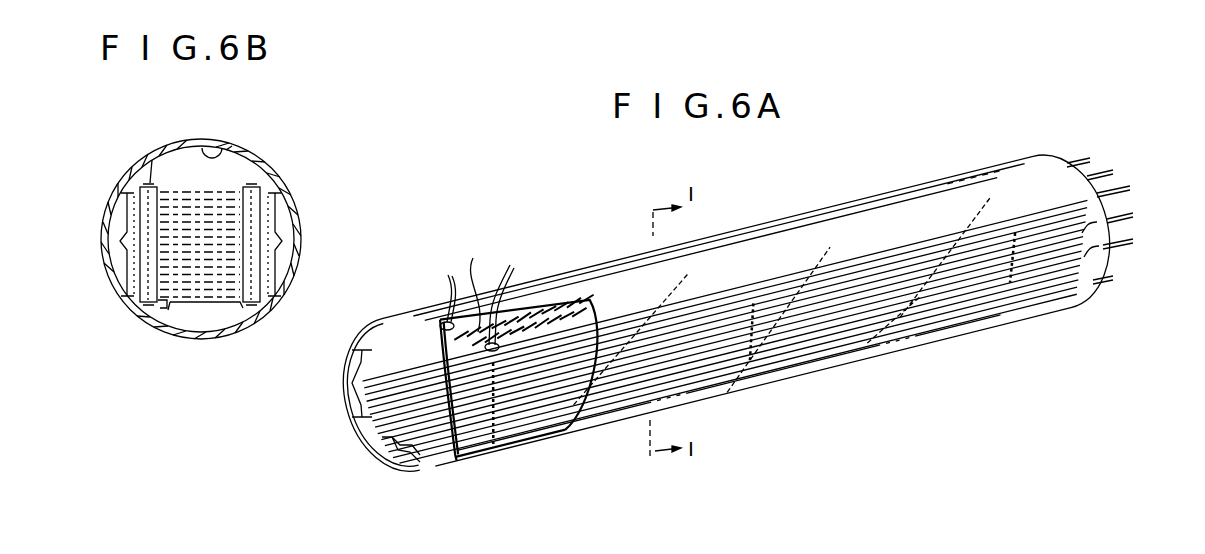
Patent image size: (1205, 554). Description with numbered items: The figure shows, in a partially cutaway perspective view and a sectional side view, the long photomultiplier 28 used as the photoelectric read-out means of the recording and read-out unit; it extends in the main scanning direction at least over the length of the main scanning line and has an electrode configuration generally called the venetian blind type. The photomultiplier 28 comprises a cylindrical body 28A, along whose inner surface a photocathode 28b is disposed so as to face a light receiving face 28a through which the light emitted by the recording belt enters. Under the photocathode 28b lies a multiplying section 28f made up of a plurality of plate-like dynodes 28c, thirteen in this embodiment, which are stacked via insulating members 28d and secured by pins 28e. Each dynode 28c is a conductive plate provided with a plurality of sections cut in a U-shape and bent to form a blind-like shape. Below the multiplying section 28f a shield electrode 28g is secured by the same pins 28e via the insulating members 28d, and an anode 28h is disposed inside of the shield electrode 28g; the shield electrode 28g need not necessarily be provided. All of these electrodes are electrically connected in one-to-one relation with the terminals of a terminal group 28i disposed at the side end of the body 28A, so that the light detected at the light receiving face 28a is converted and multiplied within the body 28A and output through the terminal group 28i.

In FIG. 6B, the photomultiplier 28 is at (278, 146).
In FIG. 6A, the photomultiplier 28 is at (891, 193).
In FIG. 6B, the light receiving face 28a is at (181, 146).
In FIG. 6A, the light receiving face 28a is at (785, 248).
In FIG. 6B, the cylindrical body 28A is at (140, 318).
In FIG. 6A, the cylindrical body 28A is at (888, 355).
In FIG. 6B, the photocathode 28b is at (226, 149).
In FIG. 6B, the plate-like dynodes 28c is at (303, 243).
In FIG. 6A, the plate-like dynodes 28c is at (508, 262).
In FIG. 6B, the insulating members 28d is at (140, 188).
In FIG. 6A, the insulating members 28d is at (473, 258).
In FIG. 6B, the pins 28e is at (150, 180).
In FIG. 6A, the pins 28e is at (447, 276).
In FIG. 6B, the multiplying section 28f is at (97, 237).
In FIG. 6A, the multiplying section 28f is at (338, 390).
In FIG. 6B, the shield electrode 28g is at (192, 305).
In FIG. 6A, the shield electrode 28g is at (443, 463).
In FIG. 6B, the anode 28h is at (165, 303).
In FIG. 6A, the anode 28h is at (400, 448).
In FIG. 6A, the terminal group 28i is at (1113, 150).